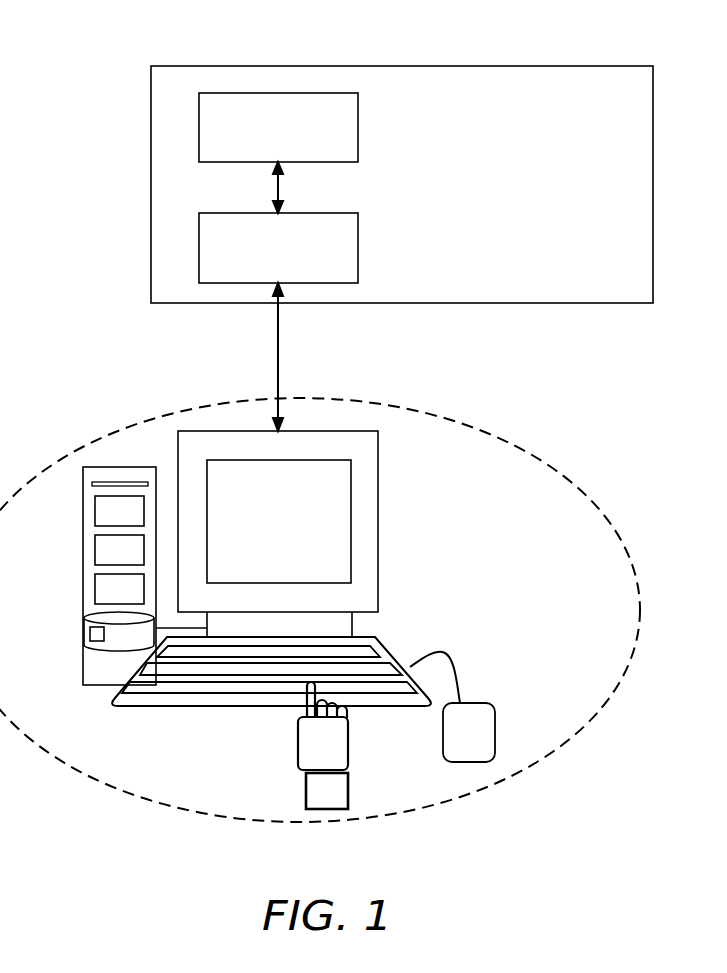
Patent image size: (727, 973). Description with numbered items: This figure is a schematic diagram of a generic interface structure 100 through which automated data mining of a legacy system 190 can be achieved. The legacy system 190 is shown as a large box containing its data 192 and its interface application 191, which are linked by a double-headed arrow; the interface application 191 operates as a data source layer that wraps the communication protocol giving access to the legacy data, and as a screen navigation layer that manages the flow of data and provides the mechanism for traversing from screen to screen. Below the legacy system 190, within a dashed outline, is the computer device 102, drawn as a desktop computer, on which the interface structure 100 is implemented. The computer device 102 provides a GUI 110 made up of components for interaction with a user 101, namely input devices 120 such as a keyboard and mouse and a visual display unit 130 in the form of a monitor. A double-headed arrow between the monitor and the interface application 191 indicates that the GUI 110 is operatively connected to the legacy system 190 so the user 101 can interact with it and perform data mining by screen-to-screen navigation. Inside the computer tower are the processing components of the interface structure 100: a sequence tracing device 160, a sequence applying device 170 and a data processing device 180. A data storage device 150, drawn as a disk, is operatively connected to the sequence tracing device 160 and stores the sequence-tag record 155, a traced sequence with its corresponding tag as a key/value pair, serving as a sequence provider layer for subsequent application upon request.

The generic interface structure 100 is at (119, 367).
The user 101 is at (323, 809).
The computer device 102 is at (537, 457).
The GUI 110 is at (458, 590).
The input devices 120 is at (468, 703).
The visual display unit 130 is at (378, 577).
The data storage device 150 is at (84, 630).
The sequence-tag record 155 is at (96, 641).
The sequence tracing device 160 is at (132, 600).
The sequence applying device 170 is at (132, 561).
The data processing device 180 is at (132, 522).
The legacy system 190 is at (401, 66).
The interface application 191 is at (199, 250).
The data 192 is at (199, 128).